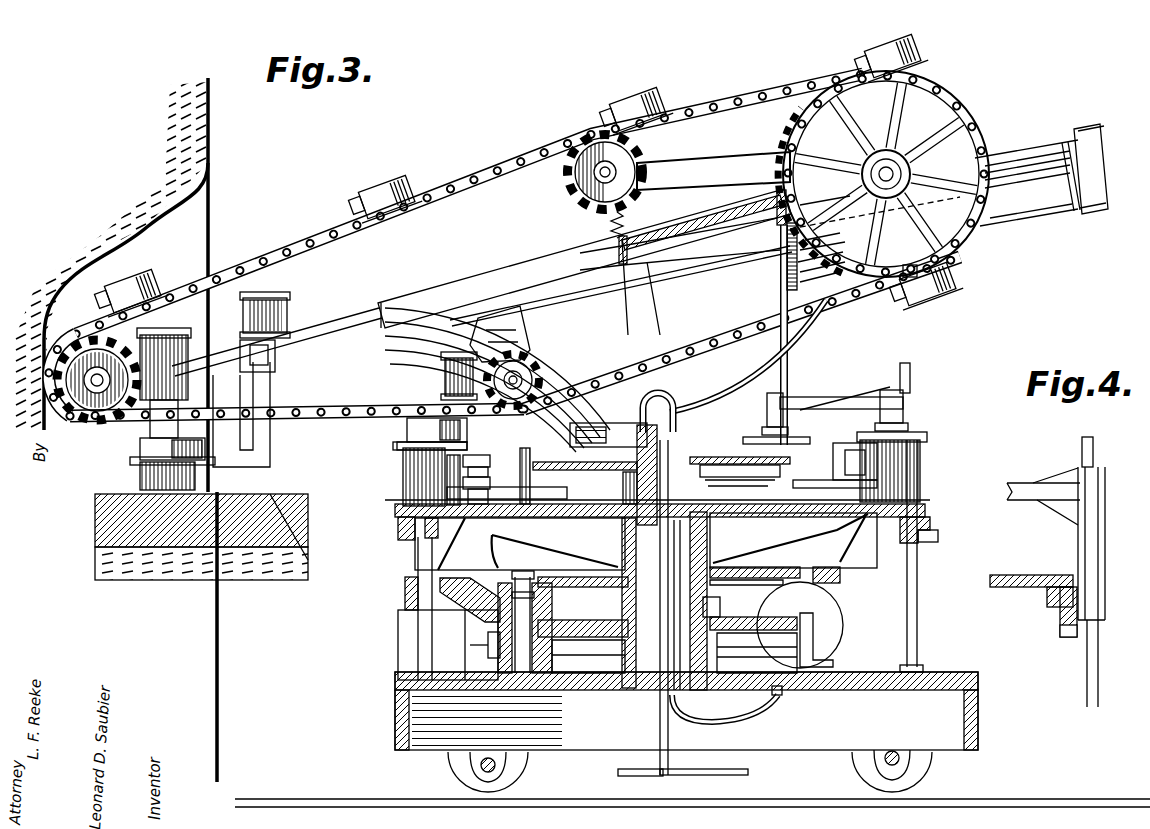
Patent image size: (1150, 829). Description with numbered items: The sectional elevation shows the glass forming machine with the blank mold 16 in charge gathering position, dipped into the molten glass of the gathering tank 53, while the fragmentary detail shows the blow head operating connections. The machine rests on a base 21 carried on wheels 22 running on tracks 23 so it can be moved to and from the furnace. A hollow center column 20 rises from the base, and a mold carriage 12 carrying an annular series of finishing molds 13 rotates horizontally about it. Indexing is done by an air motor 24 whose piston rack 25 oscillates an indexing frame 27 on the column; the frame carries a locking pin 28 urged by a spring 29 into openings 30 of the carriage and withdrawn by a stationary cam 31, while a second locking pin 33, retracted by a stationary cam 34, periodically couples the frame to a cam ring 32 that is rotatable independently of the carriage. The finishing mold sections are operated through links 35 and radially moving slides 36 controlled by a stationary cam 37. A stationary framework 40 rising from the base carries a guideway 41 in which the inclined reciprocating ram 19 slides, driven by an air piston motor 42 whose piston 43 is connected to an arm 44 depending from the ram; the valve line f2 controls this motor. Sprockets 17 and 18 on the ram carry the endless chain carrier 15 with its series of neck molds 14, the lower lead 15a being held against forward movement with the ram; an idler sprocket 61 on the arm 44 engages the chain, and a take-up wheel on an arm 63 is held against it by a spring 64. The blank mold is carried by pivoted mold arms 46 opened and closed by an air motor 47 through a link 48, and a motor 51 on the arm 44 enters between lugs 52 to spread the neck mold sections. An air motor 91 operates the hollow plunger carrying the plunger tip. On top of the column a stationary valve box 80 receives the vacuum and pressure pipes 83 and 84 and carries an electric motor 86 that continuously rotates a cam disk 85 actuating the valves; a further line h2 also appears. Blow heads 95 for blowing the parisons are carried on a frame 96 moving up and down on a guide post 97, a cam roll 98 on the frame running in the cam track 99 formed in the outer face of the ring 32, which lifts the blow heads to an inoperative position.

In FIG. 3, the mold carriage 12 is at (925, 498).
In FIG. 3, the finishing molds 13 is at (403, 468).
In FIG. 3, the neck molds 14 is at (410, 184).
In FIG. 3, the endless chain carrier 15 is at (472, 172).
In FIG. 3, the lower lead of the chain carrier 15a is at (346, 405).
In FIG. 3, the blank mold 16 is at (140, 478).
In FIG. 3, the sprocket 17 is at (798, 150).
In FIG. 3, the sprocket 18 is at (95, 330).
In FIG. 3, the reciprocating ram 19 is at (352, 326).
In FIG. 3, the hollow center column 20 is at (722, 555).
In FIG. 3, the base or platform 21 is at (935, 676).
In FIG. 3, the wheels 22 is at (458, 775).
In FIG. 3, the tracks 23 is at (368, 800).
In FIG. 3, the air motor 24 is at (832, 618).
In FIG. 3, the rack 25 is at (812, 633).
In FIG. 3, the indexing frame 27 is at (598, 605).
In FIG. 3, the locking pin 28 is at (524, 578).
In FIG. 3, the spring 29 is at (552, 604).
In FIG. 3, the openings 30 is at (837, 582).
In FIG. 3, the stationary cam 31 is at (488, 647).
In FIG. 3, the cam ring 32 is at (395, 514).
In FIG. 3, the locking pin 33 is at (415, 562).
In FIG. 3, the stationary cam 34 is at (400, 604).
In FIG. 3, the links 35 is at (510, 488).
In FIG. 3, the slides 36 is at (548, 500).
In FIG. 3, the stationary cam 37 is at (733, 455).
In FIG. 3, the stationary framework 40 is at (683, 238).
In FIG. 3, the stationary guideway 41 is at (448, 292).
In FIG. 3, the air operated piston motor 42 is at (1046, 160).
In FIG. 3, the piston 43 is at (676, 290).
In FIG. 3, the arm 44 is at (520, 322).
In FIG. 3, the blank mold carrying arms 46 is at (270, 440).
In FIG. 3, the air motor 47 is at (287, 306).
In FIG. 3, the link 48 is at (278, 352).
In FIG. 3, the air motor 51 is at (441, 376).
In FIG. 3, the lugs 52 is at (508, 420).
In FIG. 3, the gathering tank 53 is at (290, 500).
In FIG. 3, the idler sprocket 61 is at (508, 338).
In FIG. 3, the arm 63 is at (735, 172).
In FIG. 3, the spring 64 is at (608, 228).
In FIG. 3, the stationary valve box 80 is at (565, 428).
In FIG. 3, the pipe 83 is at (748, 772).
In FIG. 3, the pipe 84 is at (618, 772).
In FIG. 3, the cam disk 85 is at (704, 458).
In FIG. 3, the electric motor 86 is at (595, 408).
In FIG. 3, the air motor 91 is at (180, 336).
In FIG. 3, the blow heads 95 is at (800, 393).
In FIG. 3, the frame 96 is at (835, 408).
In FIG. 4, the frame 96 is at (1060, 503).
In FIG. 3, the guide post 97 is at (917, 590).
In FIG. 4, the guide post 97 is at (1098, 660).
In FIG. 4, the cam roll 98 is at (1055, 600).
In FIG. 3, the cam track 99 is at (938, 534).
In FIG. 3, the line f2 is at (822, 312).
In FIG. 3, the hose h2 is at (781, 698).